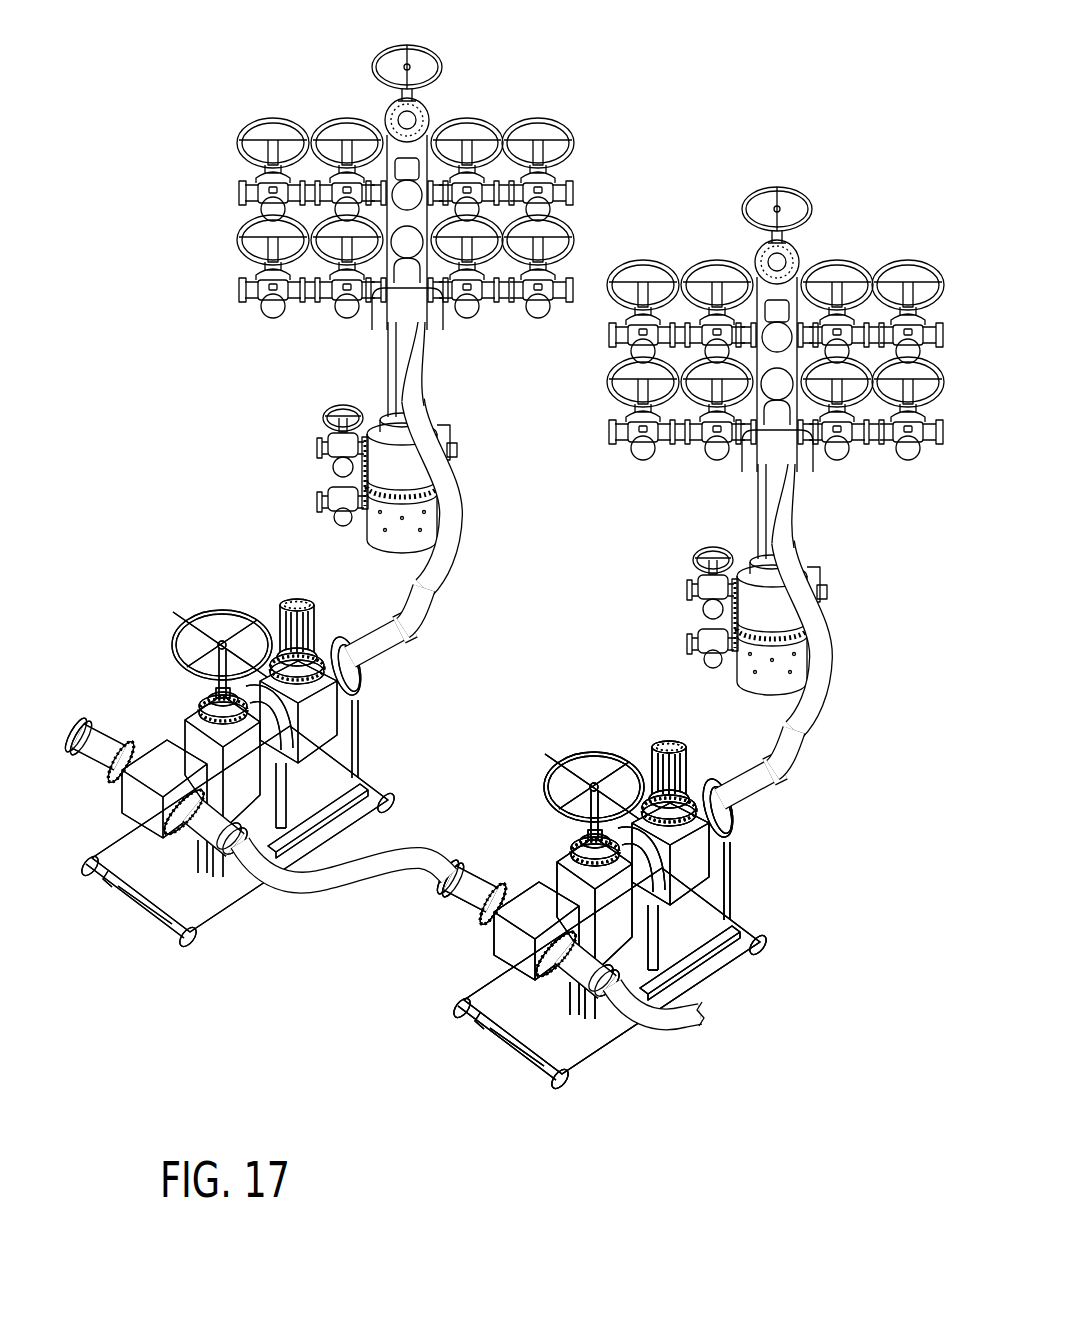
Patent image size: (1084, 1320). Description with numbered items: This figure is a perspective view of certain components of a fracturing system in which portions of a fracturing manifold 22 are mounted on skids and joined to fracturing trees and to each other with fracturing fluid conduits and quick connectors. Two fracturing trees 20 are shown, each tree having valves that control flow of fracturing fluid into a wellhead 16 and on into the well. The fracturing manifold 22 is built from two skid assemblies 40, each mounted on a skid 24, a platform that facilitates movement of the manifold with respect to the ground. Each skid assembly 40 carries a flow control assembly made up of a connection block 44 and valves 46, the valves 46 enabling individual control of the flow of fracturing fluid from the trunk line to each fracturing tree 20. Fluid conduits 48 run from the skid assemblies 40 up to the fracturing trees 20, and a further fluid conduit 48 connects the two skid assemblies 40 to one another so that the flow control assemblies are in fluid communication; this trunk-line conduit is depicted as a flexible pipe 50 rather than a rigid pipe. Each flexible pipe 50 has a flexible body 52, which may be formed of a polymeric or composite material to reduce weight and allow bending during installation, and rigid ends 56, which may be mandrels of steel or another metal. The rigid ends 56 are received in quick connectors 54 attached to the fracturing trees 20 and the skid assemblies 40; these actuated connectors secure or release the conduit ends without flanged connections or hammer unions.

The wellhead 16 is at (377, 520).
The fracturing tree 20 is at (400, 152).
The fracturing manifold 22 is at (498, 1004).
The skid 24 is at (155, 925).
The skid assembly 40 is at (112, 924).
The connection block 44 is at (158, 750).
The valve 46 is at (173, 612).
The fluid conduit 48 is at (503, 480).
The flexible pipe 50 is at (433, 600).
The flexible body 52 is at (457, 562).
The quick connector 54 is at (410, 233).
The rigid end 56 is at (412, 282).